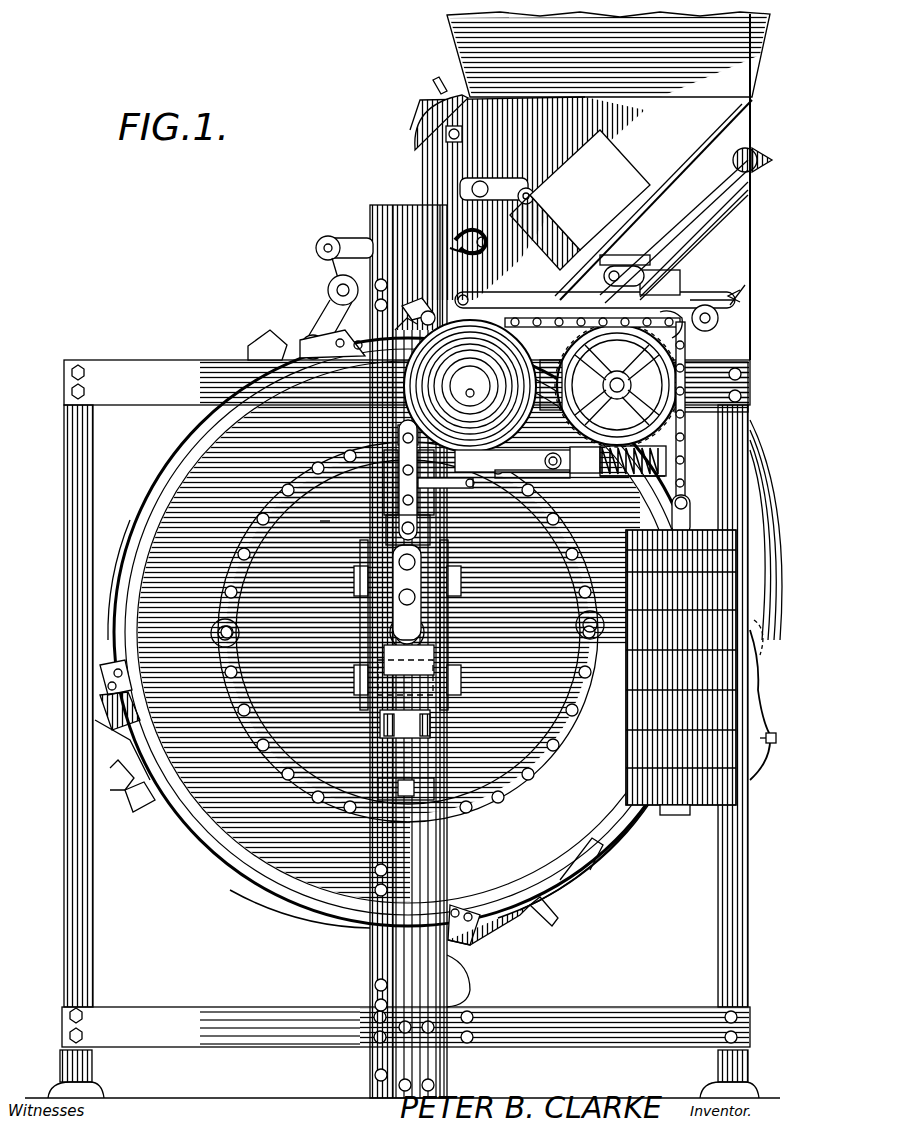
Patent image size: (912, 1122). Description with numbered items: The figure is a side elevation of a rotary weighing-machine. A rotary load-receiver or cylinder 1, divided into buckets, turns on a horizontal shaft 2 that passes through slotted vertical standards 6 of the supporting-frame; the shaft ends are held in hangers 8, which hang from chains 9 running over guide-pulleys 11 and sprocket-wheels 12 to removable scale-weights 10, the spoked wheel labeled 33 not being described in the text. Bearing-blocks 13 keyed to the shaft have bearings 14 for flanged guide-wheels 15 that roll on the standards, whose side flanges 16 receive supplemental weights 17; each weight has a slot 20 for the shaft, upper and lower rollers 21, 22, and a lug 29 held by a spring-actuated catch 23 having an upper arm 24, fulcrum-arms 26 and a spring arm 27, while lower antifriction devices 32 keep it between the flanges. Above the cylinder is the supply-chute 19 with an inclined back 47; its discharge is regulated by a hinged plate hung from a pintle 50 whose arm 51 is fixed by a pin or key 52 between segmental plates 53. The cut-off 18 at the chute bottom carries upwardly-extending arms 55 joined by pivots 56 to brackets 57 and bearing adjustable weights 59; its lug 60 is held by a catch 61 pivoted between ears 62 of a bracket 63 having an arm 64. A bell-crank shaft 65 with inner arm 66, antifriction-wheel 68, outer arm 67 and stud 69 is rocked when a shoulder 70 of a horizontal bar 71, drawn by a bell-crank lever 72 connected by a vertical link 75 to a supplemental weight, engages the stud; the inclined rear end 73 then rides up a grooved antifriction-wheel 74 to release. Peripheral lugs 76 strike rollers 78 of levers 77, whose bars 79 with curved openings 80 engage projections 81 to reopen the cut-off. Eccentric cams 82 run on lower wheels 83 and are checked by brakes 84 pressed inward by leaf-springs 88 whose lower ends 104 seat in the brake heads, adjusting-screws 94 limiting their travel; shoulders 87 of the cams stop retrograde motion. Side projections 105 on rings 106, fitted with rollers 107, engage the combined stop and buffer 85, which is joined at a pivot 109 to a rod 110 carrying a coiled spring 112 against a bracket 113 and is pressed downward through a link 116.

The rotary load-receiver or cylinder 1 is at (300, 882).
The horizontal shaft 2 is at (395, 632).
The vertical standards or guides 6 is at (432, 862).
The hangers 8 is at (390, 590).
The chains 9 is at (322, 512).
The scale-weights 10 is at (681, 672).
The guide-pulleys 11 is at (470, 386).
The sprocket-wheels 12 is at (665, 387).
The bearing-blocks 13 is at (392, 700).
The upper and lower bearings 14 is at (688, 480).
The guide-wheels 15 is at (368, 575).
The parallel side flanges 16 is at (432, 888).
The supplemental weights 17 is at (410, 785).
The cut-off 18 is at (555, 376).
The supply-chute 19 is at (590, 186).
The slot 20 is at (390, 650).
The upper antifriction roller 21 is at (400, 460).
The lower antifriction roller 22 is at (390, 725).
The spring-actuated catches 23 is at (396, 478).
The upper arm 24 is at (396, 498).
The fulcrum-arms 26 is at (384, 516).
The upper laterally-extending arm 27 is at (470, 488).
The lug or projection 29 is at (392, 432).
The lower antifriction devices 32 is at (398, 787).
The sprocket wheel 33 is at (617, 385).
The bottom or back of the supply-chute 47 is at (653, 200).
The shaft or pintle 50 is at (445, 134).
The arm 51 is at (436, 80).
The pin or key 52 is at (438, 99).
The segmental plates 53 is at (420, 113).
The upwardly-extending arms 55 is at (580, 203).
The pivots 56 is at (530, 183).
The plates or brackets 57 is at (491, 175).
The adjustable weights 59 is at (588, 190).
The lug 60 is at (595, 299).
The catch 61 is at (595, 412).
The ears 62 is at (760, 160).
The bracket 63 is at (674, 231).
The arm 64 is at (650, 250).
The shaft 65 is at (660, 290).
The inner arm 66 is at (624, 279).
The outer arm 67 is at (690, 280).
The antifriction-wheel 68 is at (625, 265).
The horizontal stud 69 is at (678, 332).
The shoulder 70 is at (700, 298).
The substantially horizontal bar 71 is at (735, 300).
The bell-crank lever 72 is at (445, 320).
The inclined rear end 73 is at (752, 300).
The grooved antifriction-wheel 74 is at (720, 318).
The vertical link or bar 75 is at (400, 319).
The lugs 76 is at (253, 338).
The levers 77 is at (330, 300).
The antifriction wheels or rollers 78 is at (300, 335).
The bars 79 is at (352, 236).
The curved openings 80 is at (460, 238).
The projections 81 is at (482, 246).
The eccentrically-arranged cams 82 is at (166, 438).
The lower wheels 83 is at (458, 980).
The brakes 84 is at (758, 702).
The combined stop and buffer 85 is at (530, 470).
The shoulders 87 is at (100, 665).
The leaf-spring 88 is at (750, 510).
The adjusting-screw 94 is at (772, 736).
The lower end of the leaf-spring 104 is at (768, 650).
The projections 105 is at (222, 638).
The rings 106 is at (510, 780).
The antifriction sleeves or rollers 107 is at (226, 644).
The pivot 109 is at (600, 470).
The shank or rod 110 is at (640, 478).
The coiled spring 112 is at (632, 472).
The bracket 113 is at (552, 452).
The link 116 is at (514, 447).